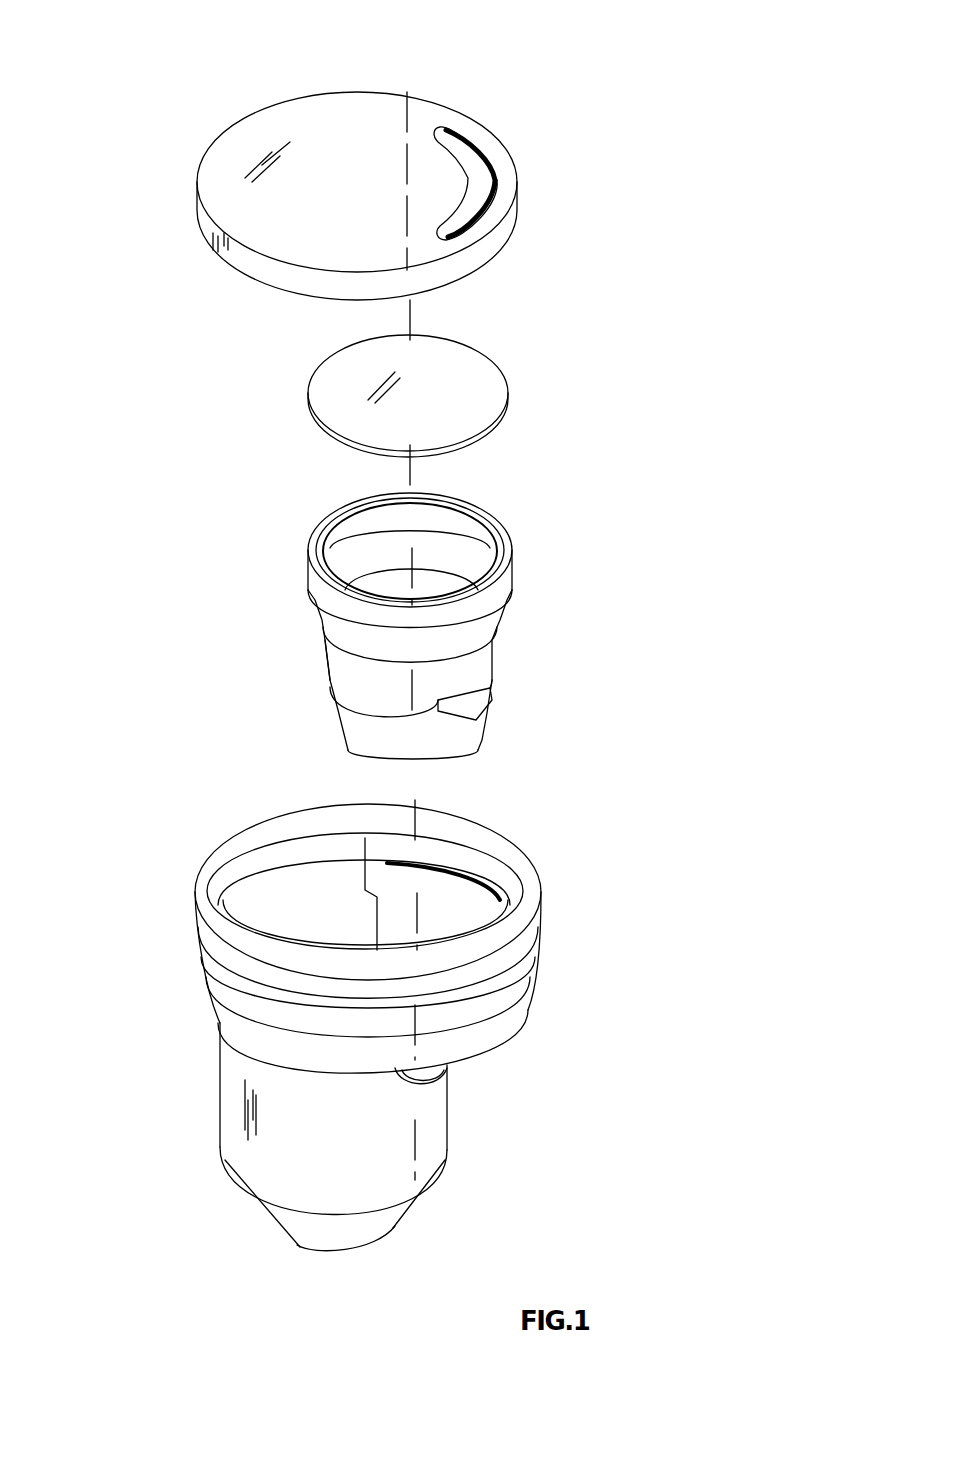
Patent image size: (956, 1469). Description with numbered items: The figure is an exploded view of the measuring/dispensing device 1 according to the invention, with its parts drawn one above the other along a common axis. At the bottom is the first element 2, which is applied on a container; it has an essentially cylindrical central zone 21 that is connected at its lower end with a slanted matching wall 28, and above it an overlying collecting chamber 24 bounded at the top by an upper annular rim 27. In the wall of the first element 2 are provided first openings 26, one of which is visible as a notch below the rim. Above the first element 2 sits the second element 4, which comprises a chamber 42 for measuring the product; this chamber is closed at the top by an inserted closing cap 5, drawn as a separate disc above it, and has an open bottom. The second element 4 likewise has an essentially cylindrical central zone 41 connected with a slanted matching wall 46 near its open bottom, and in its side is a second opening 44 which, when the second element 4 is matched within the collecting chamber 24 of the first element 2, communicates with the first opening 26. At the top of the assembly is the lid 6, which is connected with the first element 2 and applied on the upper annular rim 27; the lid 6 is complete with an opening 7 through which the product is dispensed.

The measuring/dispensing device 1 is at (605, 232).
The first element 2 is at (326, 1051).
The second element 4 is at (417, 605).
The closing cap 5 is at (470, 380).
The lid 6 is at (393, 150).
The opening 7 is at (478, 195).
The cylindrical central zone 21 is at (252, 1163).
The collecting chamber 24 is at (333, 905).
The first openings 26 is at (430, 1085).
The upper annular rim 27 is at (511, 903).
The slanted matching wall 28 is at (308, 1226).
The cylindrical central zone 41 is at (338, 668).
The chamber 42 is at (432, 583).
The second opening 44 is at (458, 700).
The slanted matching wall 46 is at (363, 722).